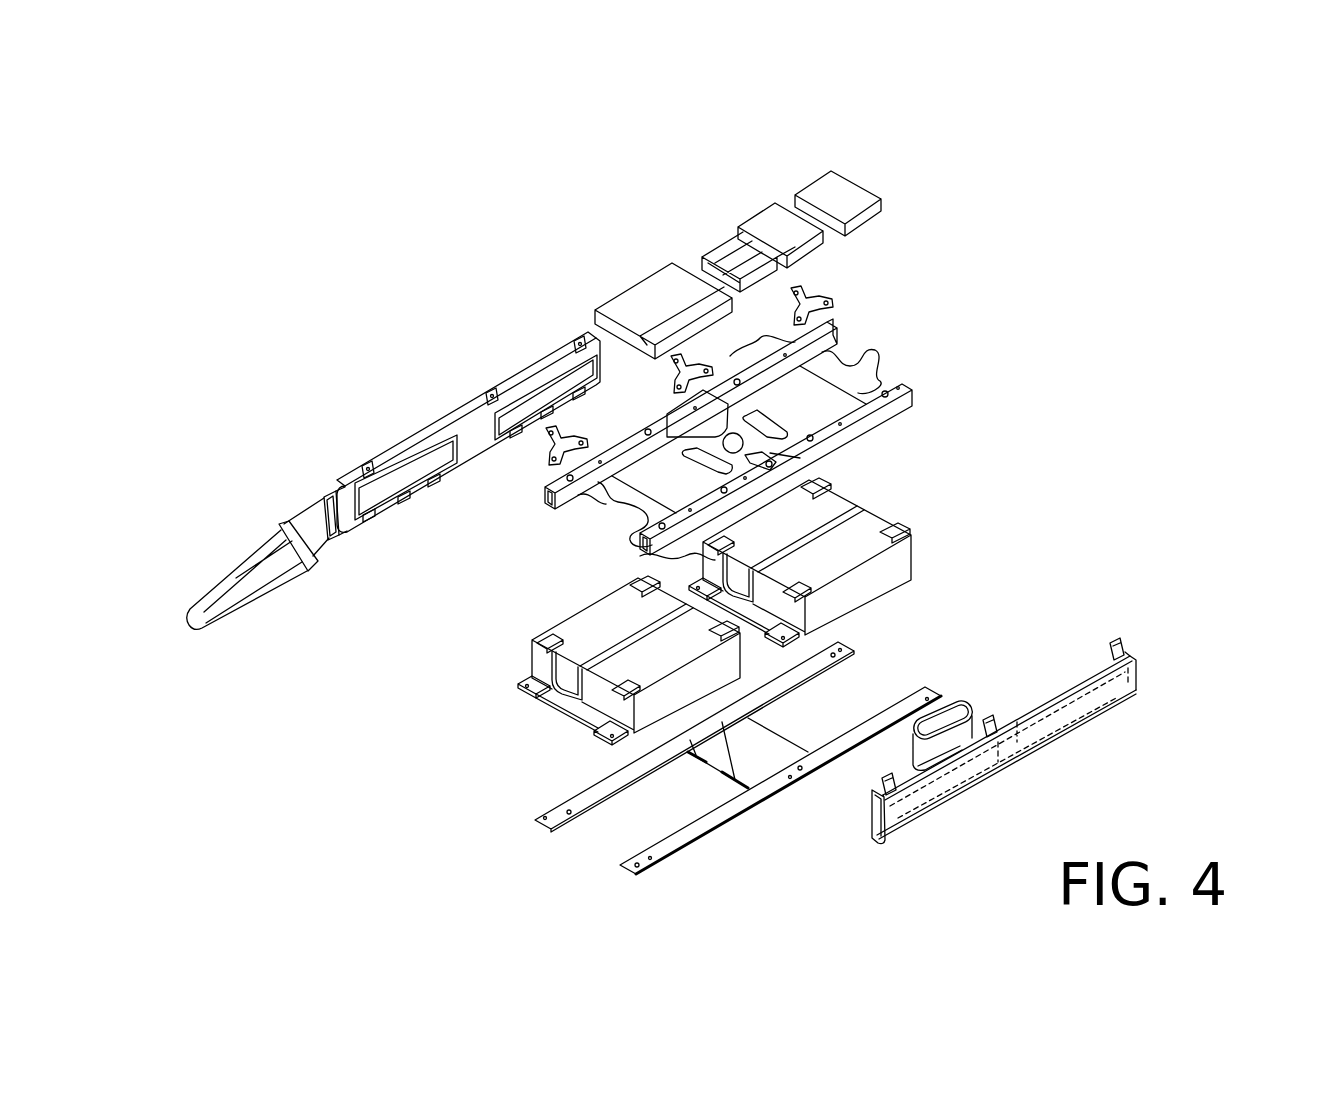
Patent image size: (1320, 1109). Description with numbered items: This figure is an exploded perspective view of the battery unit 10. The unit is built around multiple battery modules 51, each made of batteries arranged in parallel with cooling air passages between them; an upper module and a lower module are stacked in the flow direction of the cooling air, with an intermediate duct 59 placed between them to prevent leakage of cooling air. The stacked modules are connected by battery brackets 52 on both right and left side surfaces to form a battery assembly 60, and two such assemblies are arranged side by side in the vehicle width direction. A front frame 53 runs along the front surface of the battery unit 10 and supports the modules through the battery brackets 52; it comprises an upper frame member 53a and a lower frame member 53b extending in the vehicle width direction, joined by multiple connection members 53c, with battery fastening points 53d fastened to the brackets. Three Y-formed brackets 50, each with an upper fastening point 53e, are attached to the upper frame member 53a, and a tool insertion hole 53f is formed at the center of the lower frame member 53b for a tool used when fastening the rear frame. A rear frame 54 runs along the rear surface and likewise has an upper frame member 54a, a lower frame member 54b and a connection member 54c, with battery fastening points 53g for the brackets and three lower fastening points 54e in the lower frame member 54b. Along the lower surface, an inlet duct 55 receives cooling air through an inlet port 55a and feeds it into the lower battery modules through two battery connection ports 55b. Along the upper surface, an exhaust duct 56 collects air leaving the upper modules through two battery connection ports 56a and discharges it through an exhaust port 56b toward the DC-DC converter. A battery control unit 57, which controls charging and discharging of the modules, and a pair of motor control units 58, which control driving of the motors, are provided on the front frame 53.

The battery unit 10 is at (972, 405).
The Y-formed bracket 50 is at (784, 315).
The battery module 51 is at (857, 530).
The battery bracket 52 is at (912, 542).
The front frame 53 is at (704, 448).
The upper frame member 53a is at (542, 497).
The lower frame member 53b is at (641, 540).
The connection member 53c is at (855, 370).
The battery fastening point 53d is at (738, 381).
The upper fastening point 53e is at (798, 292).
The tool insertion hole 53f is at (800, 458).
The battery fastening point 53g is at (835, 656).
The rear frame 54 is at (719, 762).
The upper frame member 54a is at (552, 812).
The lower frame member 54b is at (708, 825).
The connection member 54c is at (781, 745).
The lower fastening point 54e is at (928, 698).
The inlet duct 55 is at (1011, 741).
The inlet port 55a is at (958, 703).
The battery connection port 55b is at (1097, 723).
The exhaust duct 56 is at (393, 479).
The battery connection port 56a is at (547, 393).
The exhaust port 56b is at (263, 585).
The battery control unit 57 is at (640, 293).
The motor control unit 58 is at (763, 218).
The intermediate duct 59 is at (822, 550).
The battery assembly 60 is at (711, 616).